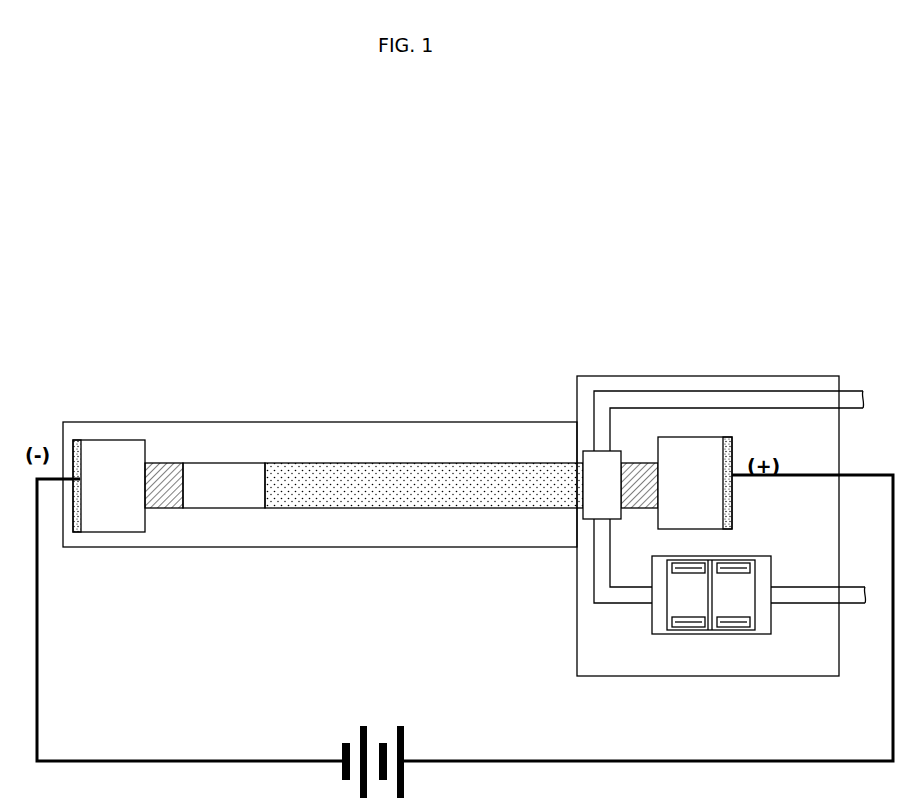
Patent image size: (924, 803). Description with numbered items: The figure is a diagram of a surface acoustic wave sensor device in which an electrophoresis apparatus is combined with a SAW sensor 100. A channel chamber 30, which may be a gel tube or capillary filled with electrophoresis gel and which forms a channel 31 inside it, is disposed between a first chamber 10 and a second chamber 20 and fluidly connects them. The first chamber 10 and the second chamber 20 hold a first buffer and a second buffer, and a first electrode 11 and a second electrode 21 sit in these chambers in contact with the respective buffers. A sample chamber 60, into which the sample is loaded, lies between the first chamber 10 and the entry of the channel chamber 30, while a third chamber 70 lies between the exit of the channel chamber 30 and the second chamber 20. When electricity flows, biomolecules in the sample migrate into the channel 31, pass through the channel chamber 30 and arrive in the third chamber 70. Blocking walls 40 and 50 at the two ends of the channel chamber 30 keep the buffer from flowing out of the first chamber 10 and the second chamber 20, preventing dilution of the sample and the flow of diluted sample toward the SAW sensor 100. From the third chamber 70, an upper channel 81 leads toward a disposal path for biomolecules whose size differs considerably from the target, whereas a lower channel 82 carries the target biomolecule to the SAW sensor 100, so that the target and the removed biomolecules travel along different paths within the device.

The first chamber 10 is at (113, 442).
The first electrode 11 is at (78, 440).
The second chamber 20 is at (695, 437).
The second electrode 21 is at (733, 452).
The channel chamber 30 is at (345, 462).
The channel 31 is at (398, 490).
The blocking wall 40 is at (163, 463).
The blocking wall 50 is at (628, 460).
The sample chamber 60 is at (220, 463).
The third chamber 70 is at (585, 450).
The upper channel 81 is at (787, 389).
The lower channel 82 is at (622, 605).
The SAW sensor 100 is at (693, 628).